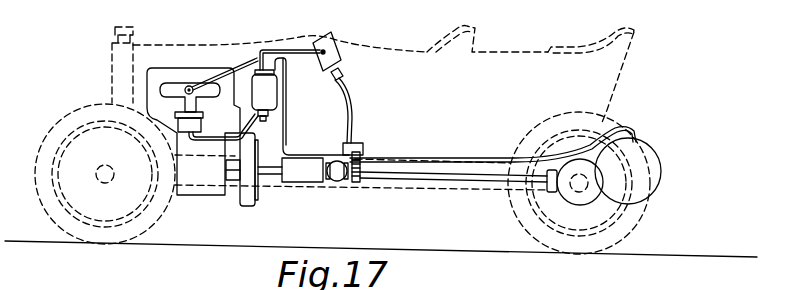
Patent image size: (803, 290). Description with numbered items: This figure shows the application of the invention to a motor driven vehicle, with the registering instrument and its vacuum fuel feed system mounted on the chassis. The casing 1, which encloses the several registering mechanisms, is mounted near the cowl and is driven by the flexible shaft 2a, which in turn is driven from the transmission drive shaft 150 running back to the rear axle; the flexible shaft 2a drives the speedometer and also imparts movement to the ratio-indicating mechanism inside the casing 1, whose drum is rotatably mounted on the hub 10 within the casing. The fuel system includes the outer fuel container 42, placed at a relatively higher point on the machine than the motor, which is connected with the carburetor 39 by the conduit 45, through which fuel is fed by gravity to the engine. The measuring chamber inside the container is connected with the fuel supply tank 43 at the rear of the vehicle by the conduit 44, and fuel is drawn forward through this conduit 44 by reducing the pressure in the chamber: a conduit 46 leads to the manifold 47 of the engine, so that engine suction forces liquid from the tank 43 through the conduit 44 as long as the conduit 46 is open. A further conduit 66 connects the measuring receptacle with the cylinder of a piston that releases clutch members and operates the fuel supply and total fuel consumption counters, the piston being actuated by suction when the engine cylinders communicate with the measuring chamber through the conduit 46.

The hub 10 is at (148, 78).
The manifold 47 is at (172, 90).
The conduit 46 is at (245, 64).
The conduit 66 is at (300, 50).
The casing 1 is at (341, 57).
The flexible shaft 2a is at (349, 104).
The outer fuel container 42 is at (265, 90).
The carburetor 39 is at (185, 122).
The conduit 45 is at (208, 137).
The conduit 44 is at (455, 158).
The transmission drive shaft 150 is at (423, 181).
The fuel supply tank 43 is at (652, 167).